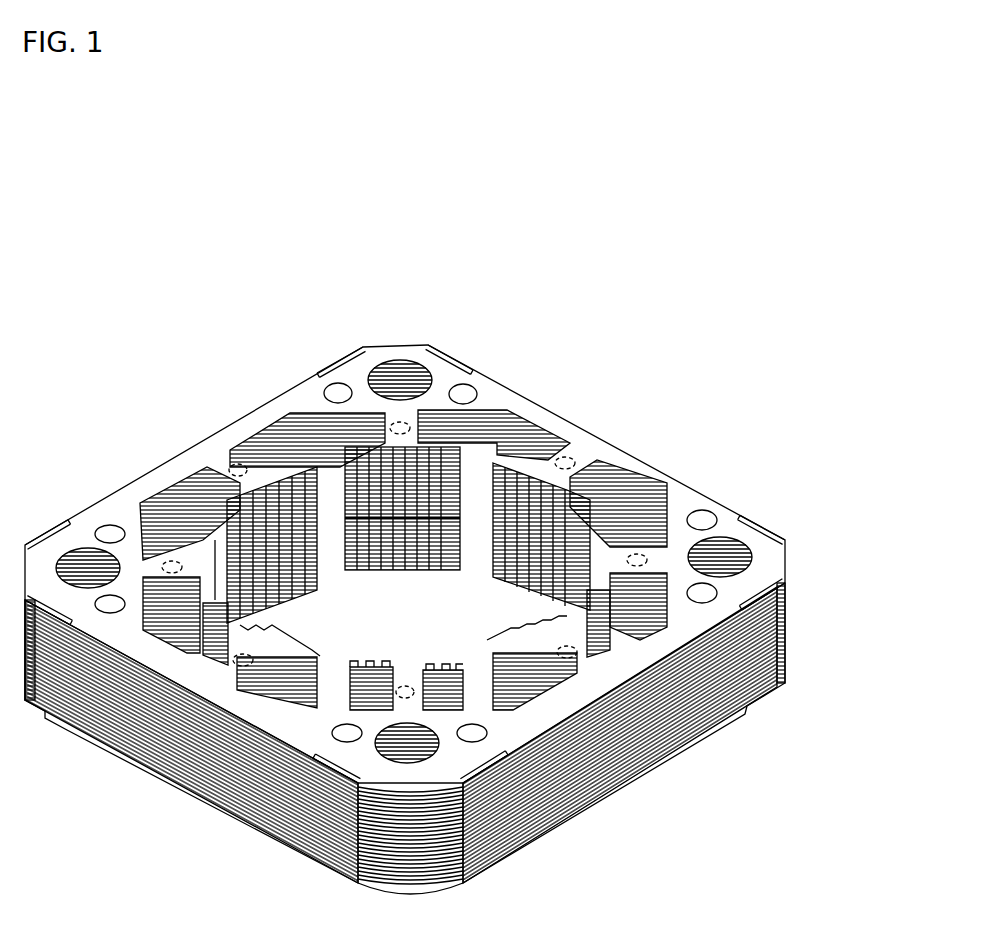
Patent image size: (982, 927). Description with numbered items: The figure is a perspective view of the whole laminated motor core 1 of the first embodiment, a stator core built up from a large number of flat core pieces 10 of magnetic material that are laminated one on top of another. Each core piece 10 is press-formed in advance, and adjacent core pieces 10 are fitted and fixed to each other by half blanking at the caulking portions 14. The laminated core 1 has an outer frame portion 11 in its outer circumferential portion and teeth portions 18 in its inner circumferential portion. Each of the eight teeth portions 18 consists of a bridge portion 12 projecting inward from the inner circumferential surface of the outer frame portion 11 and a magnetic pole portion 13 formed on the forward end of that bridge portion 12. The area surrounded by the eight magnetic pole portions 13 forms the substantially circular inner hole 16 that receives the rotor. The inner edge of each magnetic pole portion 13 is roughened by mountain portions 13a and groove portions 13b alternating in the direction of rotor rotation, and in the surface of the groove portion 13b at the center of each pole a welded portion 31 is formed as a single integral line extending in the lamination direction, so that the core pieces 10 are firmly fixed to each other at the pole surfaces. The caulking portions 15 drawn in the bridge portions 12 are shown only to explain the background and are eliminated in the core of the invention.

The laminated core 1 is at (795, 628).
The core piece 10 is at (723, 733).
The outer frame portion 11 is at (248, 427).
The bridge portion 12 is at (548, 445).
The magnetic pole portion 13 is at (207, 537).
The mountain portion 13a is at (400, 663).
The groove portion 13b is at (452, 663).
The caulking portion 14 is at (330, 383).
The caulking portion 15 is at (673, 500).
The inner hole 16 is at (330, 555).
The teeth portion 18 is at (580, 457).
The welded portion 31 is at (468, 423).